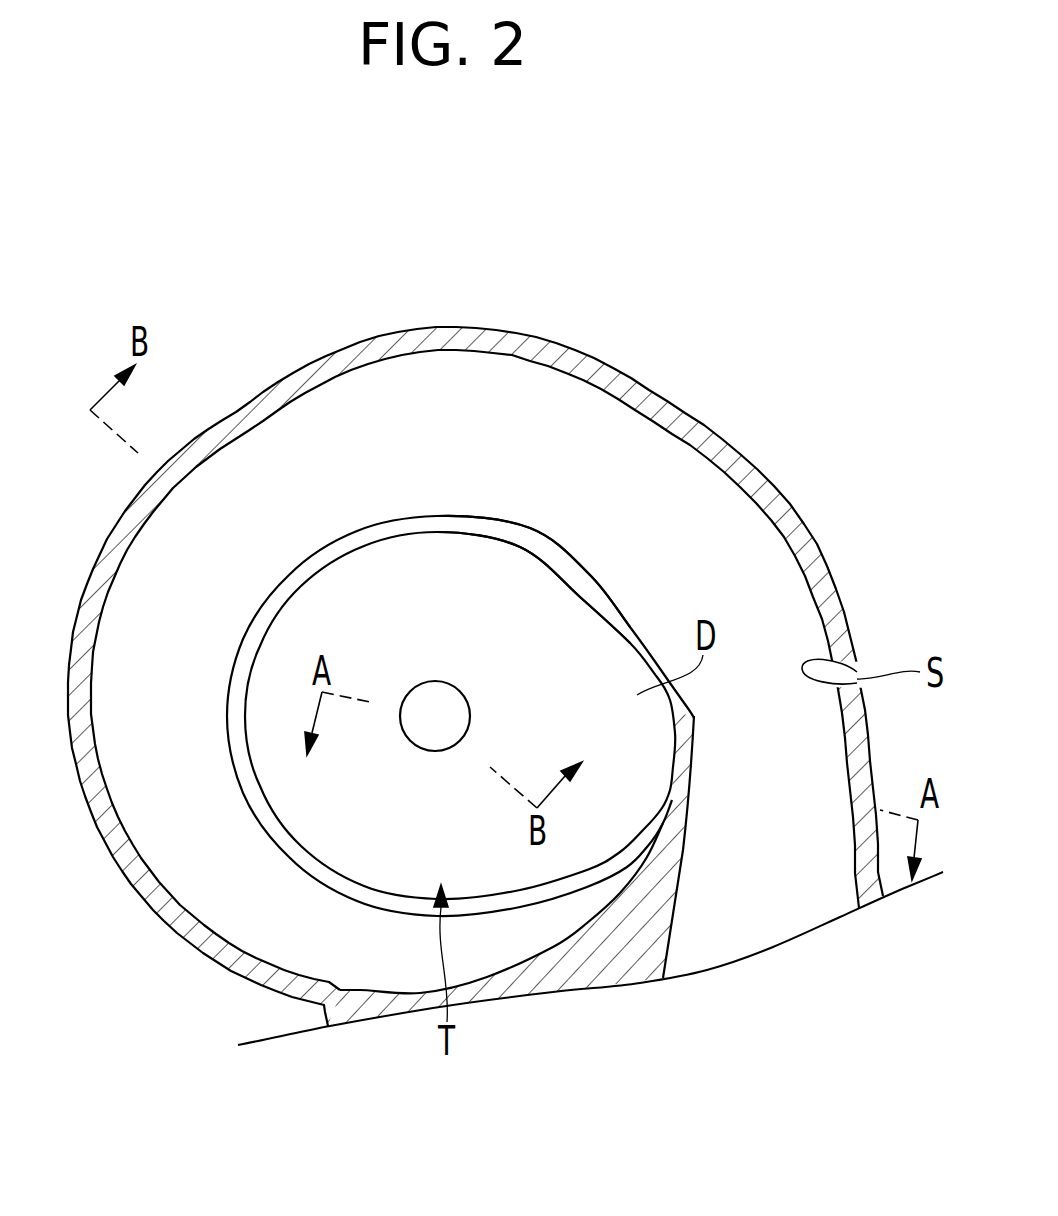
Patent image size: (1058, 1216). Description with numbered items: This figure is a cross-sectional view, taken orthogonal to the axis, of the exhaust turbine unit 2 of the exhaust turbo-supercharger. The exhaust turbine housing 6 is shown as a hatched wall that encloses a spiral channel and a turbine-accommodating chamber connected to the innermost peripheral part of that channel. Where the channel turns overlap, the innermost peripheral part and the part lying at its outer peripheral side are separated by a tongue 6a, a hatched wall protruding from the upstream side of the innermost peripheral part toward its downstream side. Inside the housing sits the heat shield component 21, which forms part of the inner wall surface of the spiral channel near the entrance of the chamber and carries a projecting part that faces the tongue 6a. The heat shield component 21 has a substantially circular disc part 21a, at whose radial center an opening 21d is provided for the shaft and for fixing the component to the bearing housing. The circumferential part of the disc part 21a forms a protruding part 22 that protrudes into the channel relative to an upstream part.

The exhaust turbine unit 2 is at (643, 322).
The exhaust turbine housing 6 is at (752, 462).
The tongue 6a is at (692, 744).
The heat shield component 21 is at (431, 490).
The substantially circular disc part 21a is at (443, 567).
The opening 21d is at (437, 697).
The protruding part 22 is at (572, 573).